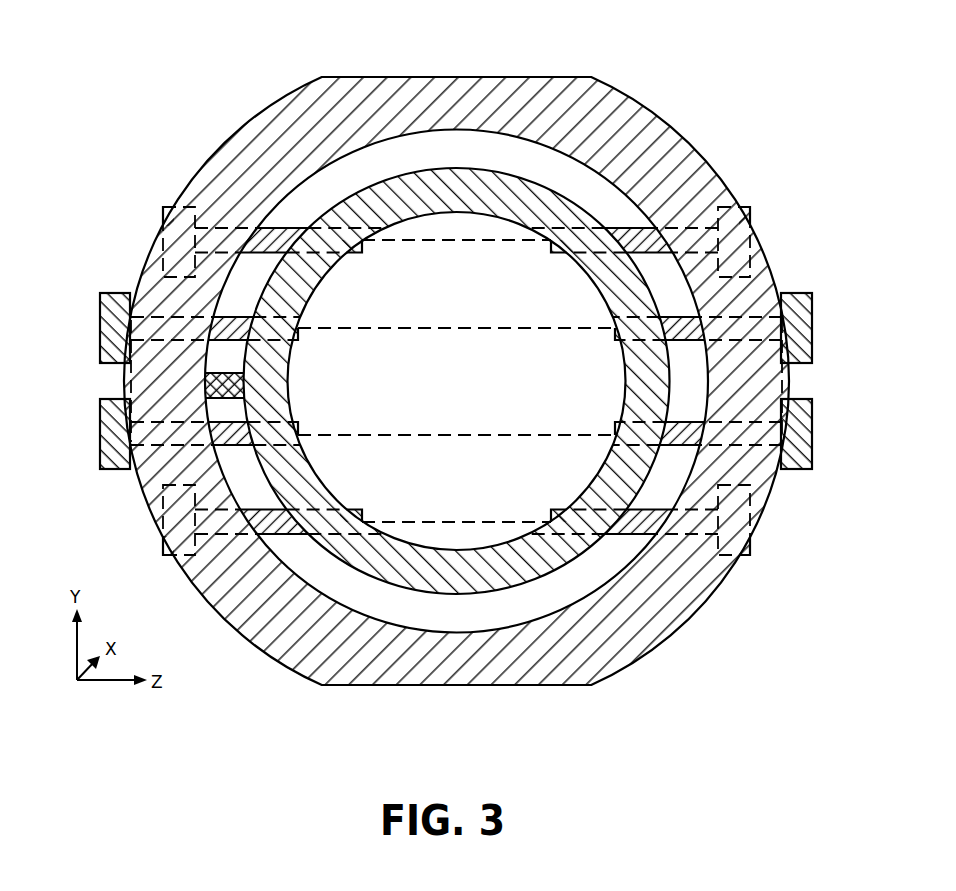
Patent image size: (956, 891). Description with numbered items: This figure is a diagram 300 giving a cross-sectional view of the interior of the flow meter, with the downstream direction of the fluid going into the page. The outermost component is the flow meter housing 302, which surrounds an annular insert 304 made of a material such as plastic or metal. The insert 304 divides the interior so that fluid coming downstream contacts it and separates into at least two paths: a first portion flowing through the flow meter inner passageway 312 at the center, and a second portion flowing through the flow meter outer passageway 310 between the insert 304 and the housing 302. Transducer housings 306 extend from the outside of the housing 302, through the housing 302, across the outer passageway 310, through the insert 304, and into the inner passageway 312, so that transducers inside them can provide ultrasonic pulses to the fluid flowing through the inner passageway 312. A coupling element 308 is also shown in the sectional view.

The diagram 300 is at (153, 98).
The flow meter housing 302 is at (660, 132).
The insert 304 is at (403, 197).
The transducer housing 306 is at (805, 297).
The coupling element 308 is at (234, 382).
The flow meter outer passageway 310 is at (387, 152).
The flow meter inner passageway 312 is at (444, 253).